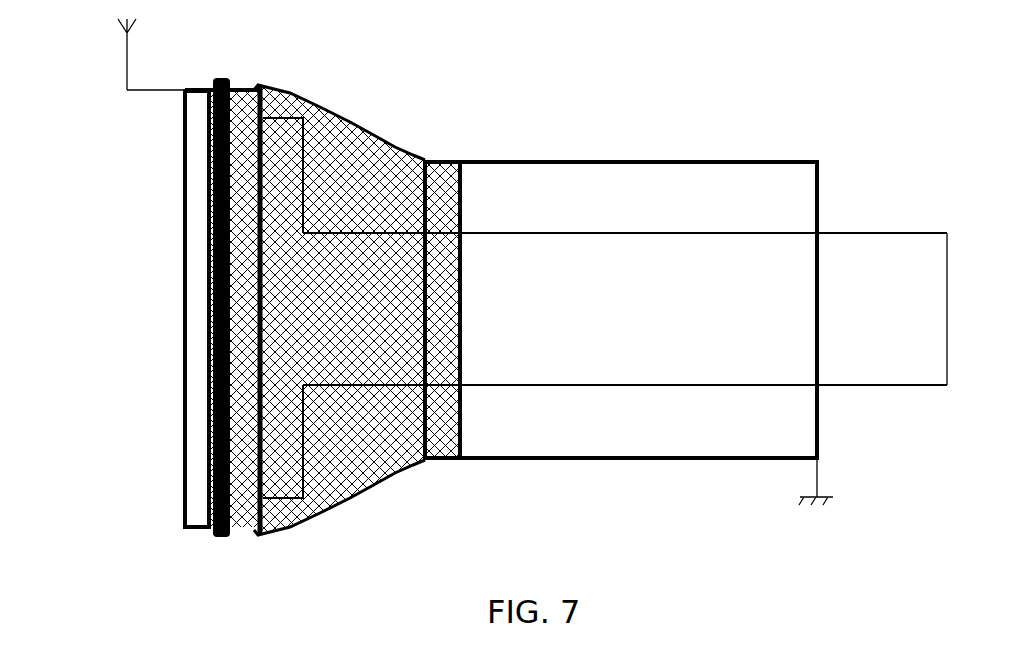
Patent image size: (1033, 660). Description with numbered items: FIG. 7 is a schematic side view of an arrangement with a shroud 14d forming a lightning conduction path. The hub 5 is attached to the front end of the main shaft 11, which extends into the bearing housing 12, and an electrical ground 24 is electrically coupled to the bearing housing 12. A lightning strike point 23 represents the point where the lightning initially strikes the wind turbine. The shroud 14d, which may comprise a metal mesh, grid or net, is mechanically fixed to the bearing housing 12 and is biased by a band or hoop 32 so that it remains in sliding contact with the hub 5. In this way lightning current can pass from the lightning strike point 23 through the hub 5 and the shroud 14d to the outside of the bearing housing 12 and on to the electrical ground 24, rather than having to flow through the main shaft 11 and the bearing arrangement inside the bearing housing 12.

The hub 5 is at (183, 235).
The main shaft 11 is at (923, 233).
The bearing housing 12 is at (745, 161).
The shroud 14d is at (352, 105).
The lightning strike point 23 is at (127, 60).
The electrical ground 24 is at (817, 465).
The band or hoop 32 is at (218, 78).